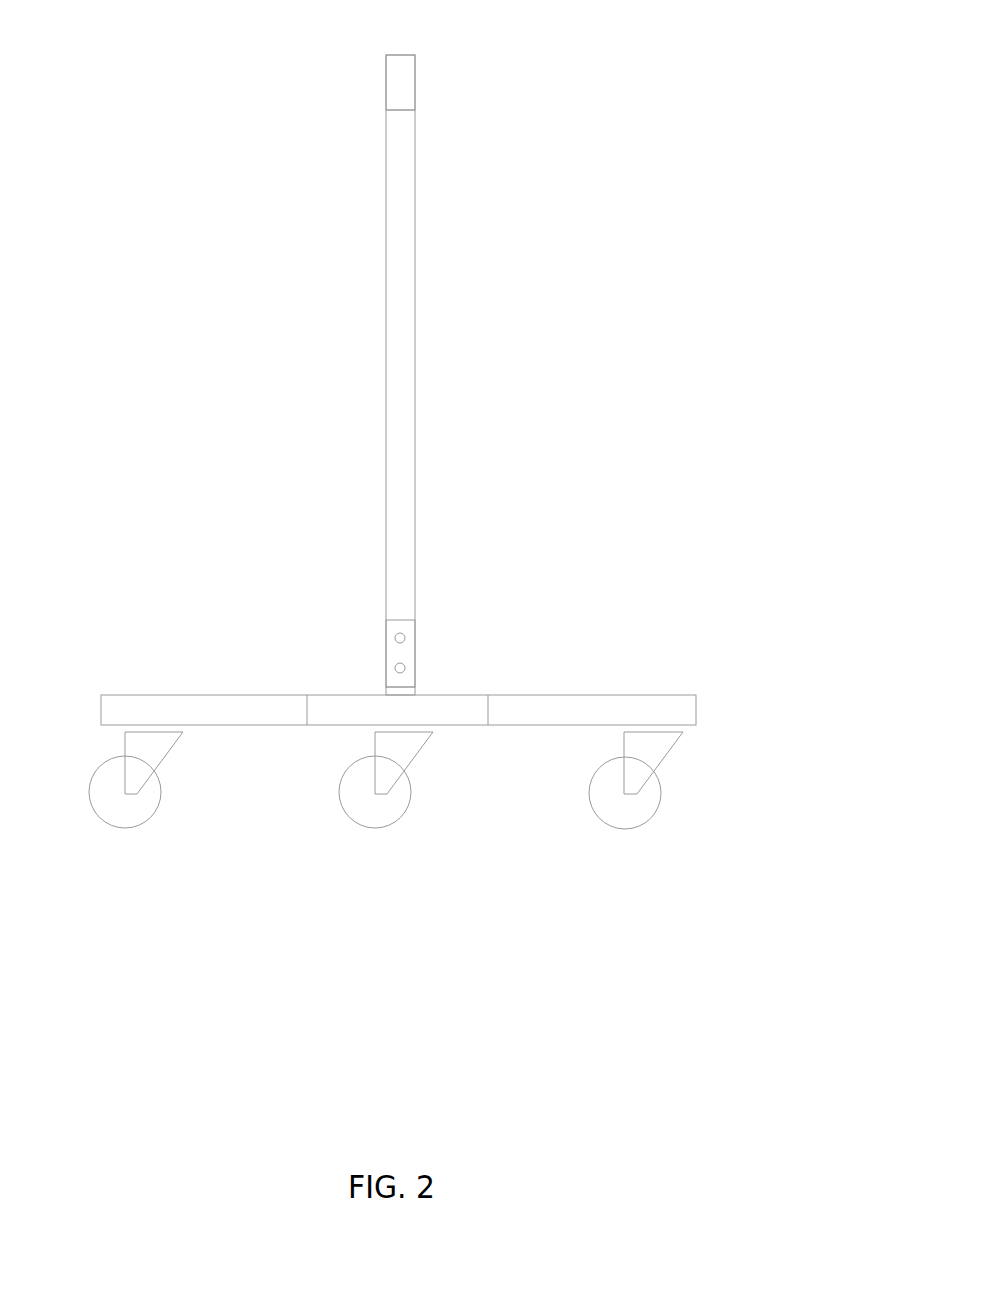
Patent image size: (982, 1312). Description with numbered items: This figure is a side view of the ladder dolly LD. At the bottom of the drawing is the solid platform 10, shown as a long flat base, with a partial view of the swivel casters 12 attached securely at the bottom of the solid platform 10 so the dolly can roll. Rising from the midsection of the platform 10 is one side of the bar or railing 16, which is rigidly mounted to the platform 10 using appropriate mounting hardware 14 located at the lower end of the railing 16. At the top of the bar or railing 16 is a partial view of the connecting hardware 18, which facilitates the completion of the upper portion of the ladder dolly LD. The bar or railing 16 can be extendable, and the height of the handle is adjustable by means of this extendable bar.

The solid platform 10 is at (398, 649).
The swivel casters 12 is at (449, 810).
The mounting hardware 14 is at (487, 606).
The railing 16 is at (305, 375).
The connecting hardware 18 is at (487, 63).
The ladder dolly LD is at (173, 425).